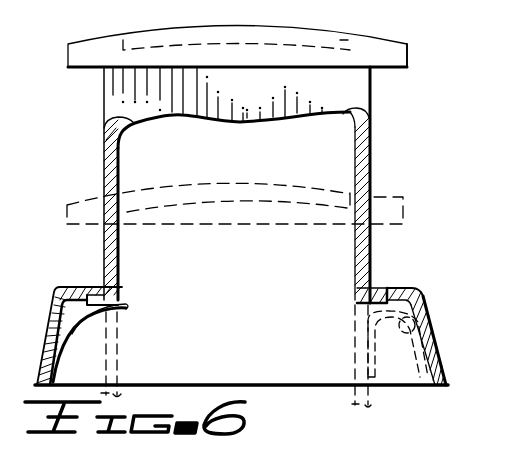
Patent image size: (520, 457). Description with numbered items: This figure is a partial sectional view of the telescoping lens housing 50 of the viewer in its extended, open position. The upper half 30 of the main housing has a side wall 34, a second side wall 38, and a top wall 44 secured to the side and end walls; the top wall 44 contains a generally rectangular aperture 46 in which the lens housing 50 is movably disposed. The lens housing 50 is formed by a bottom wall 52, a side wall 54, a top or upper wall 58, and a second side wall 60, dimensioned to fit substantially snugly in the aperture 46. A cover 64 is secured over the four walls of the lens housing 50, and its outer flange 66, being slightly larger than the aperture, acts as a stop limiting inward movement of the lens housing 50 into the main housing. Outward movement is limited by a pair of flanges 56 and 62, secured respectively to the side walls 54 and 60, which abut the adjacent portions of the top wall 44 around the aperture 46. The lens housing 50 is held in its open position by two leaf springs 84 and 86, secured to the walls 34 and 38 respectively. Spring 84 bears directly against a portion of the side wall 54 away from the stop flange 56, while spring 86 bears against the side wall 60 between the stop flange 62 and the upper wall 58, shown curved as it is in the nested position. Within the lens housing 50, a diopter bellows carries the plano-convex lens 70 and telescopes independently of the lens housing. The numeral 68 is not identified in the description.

The upper half of the housing 30 is at (449, 367).
The side wall 34 is at (48, 311).
The second side wall 38 is at (436, 338).
The top wall 44 is at (386, 290).
The rectangular aperture 46 is at (362, 285).
The lens housing 50 is at (390, 137).
The bottom wall 52 is at (134, 143).
The side wall 54 is at (108, 167).
The flange 56 is at (101, 297).
The top wall 58 is at (115, 82).
The second side wall 60 is at (364, 168).
The flange 62 is at (378, 312).
The cover 64 is at (383, 35).
The outer flange 66 is at (400, 58).
The recess 68 is at (336, 35).
The plano-convex lens 70 is at (152, 40).
The leaf spring 84 is at (85, 316).
The leaf spring 86 is at (434, 323).